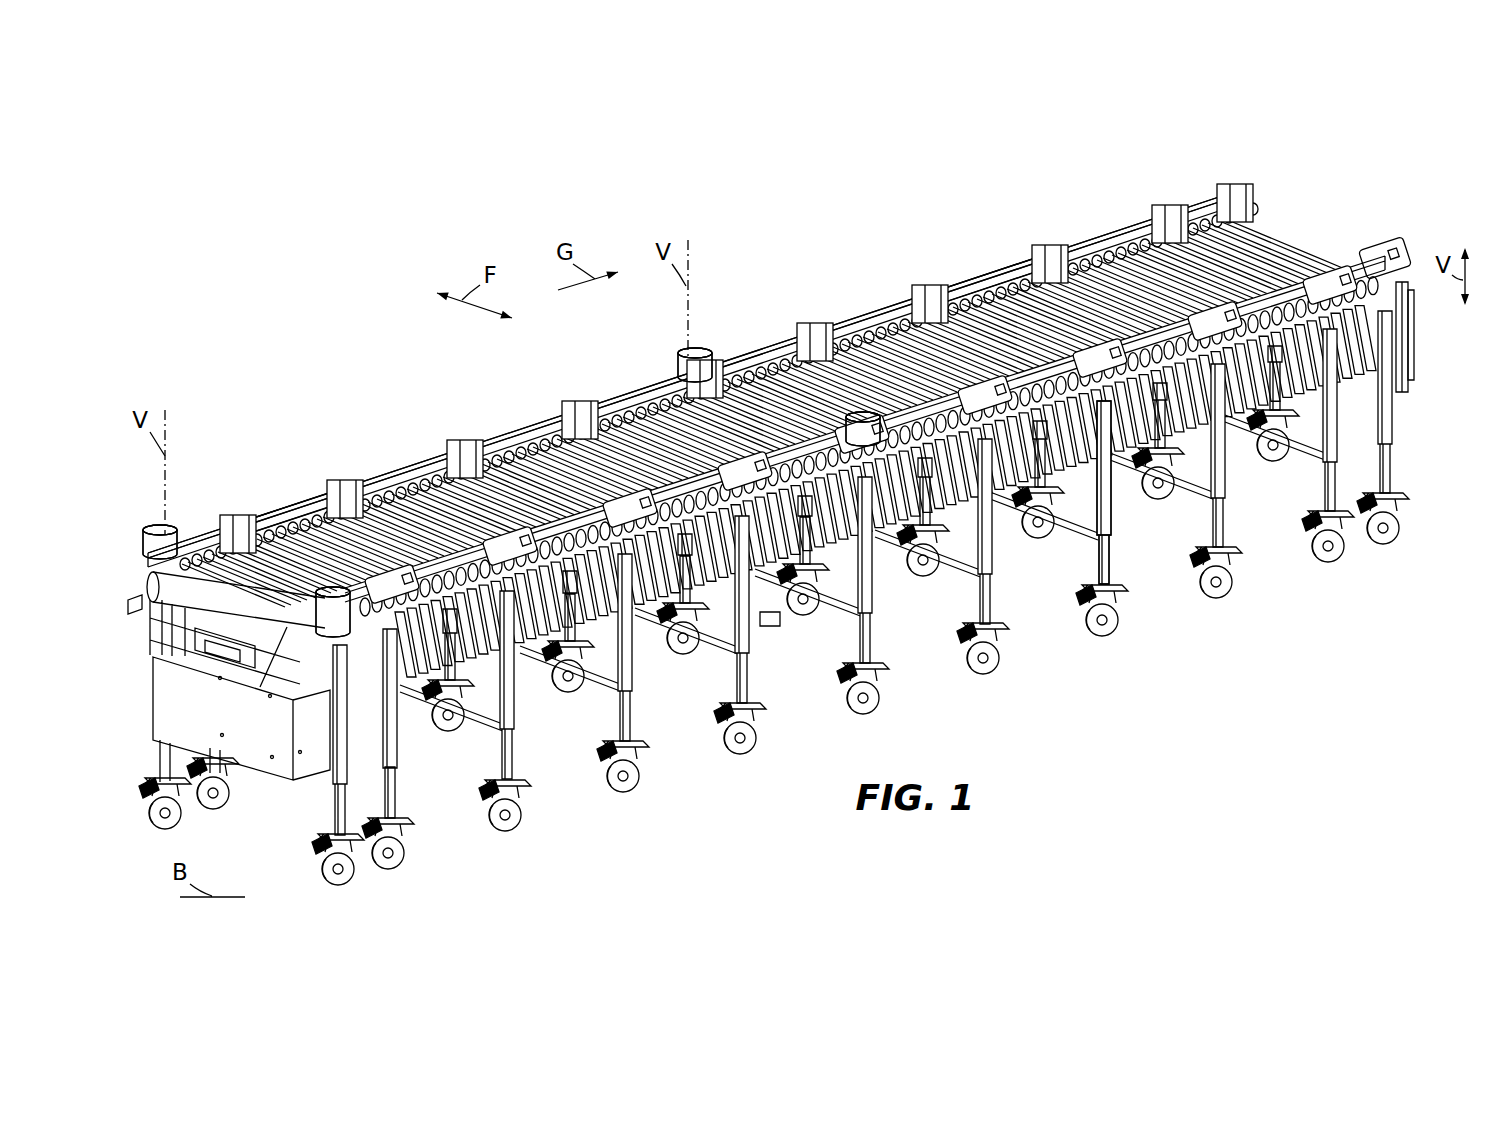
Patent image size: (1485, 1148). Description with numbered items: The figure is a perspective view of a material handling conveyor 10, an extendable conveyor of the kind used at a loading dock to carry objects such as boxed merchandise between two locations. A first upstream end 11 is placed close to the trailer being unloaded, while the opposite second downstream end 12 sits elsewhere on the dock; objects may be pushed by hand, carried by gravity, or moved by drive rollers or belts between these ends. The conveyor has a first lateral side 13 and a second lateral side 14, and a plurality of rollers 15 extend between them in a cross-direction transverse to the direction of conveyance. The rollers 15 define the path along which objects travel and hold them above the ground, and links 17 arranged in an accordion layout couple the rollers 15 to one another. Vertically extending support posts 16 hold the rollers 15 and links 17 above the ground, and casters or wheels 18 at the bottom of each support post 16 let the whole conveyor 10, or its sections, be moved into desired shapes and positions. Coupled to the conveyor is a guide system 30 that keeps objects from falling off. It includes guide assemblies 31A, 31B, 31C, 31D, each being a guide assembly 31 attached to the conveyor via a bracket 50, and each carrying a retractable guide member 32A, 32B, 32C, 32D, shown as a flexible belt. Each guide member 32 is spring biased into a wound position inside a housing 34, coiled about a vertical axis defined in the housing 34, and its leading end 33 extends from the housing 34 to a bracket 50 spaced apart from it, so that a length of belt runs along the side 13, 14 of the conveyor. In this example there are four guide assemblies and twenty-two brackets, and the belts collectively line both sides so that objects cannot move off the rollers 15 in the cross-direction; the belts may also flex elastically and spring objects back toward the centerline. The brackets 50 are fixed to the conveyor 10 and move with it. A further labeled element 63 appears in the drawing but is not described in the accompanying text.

The material handling conveyor 10 is at (1160, 656).
The first upstream end 11 is at (135, 646).
The second downstream end 12 is at (1368, 185).
The first lateral side 13 is at (1432, 330).
The second lateral side 14 is at (1198, 162).
The rollers 15 is at (1146, 280).
The support posts 16 is at (512, 805).
The links 17 is at (700, 650).
The casters or wheels 18 is at (445, 735).
The guide system 30 is at (1038, 205).
The guide assembly 31 is at (700, 344).
The guide assembly 31A is at (336, 640).
The guide assembly 31B is at (171, 527).
The guide assembly 31C is at (905, 590).
The guide assembly 31D is at (684, 350).
The retractable guide member 32 is at (960, 288).
The retractable guide member 32A is at (545, 680).
The retractable guide member 32B is at (345, 447).
The retractable guide member 32C is at (1120, 462).
The retractable guide member 32D is at (987, 262).
The leading end 33 is at (1380, 255).
The housing 34 is at (706, 355).
The bracket 50 is at (1232, 182).
The guide rail segment 63 is at (1020, 256).